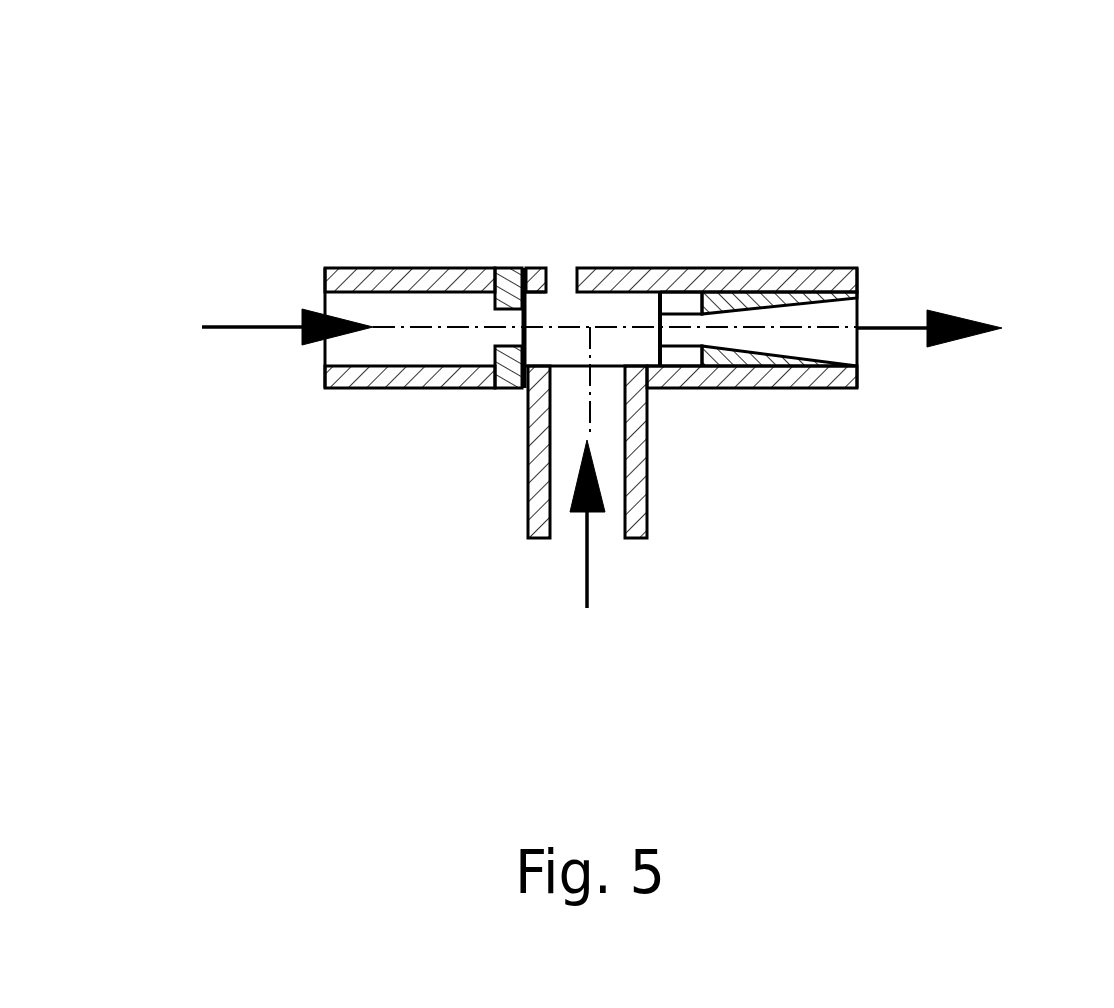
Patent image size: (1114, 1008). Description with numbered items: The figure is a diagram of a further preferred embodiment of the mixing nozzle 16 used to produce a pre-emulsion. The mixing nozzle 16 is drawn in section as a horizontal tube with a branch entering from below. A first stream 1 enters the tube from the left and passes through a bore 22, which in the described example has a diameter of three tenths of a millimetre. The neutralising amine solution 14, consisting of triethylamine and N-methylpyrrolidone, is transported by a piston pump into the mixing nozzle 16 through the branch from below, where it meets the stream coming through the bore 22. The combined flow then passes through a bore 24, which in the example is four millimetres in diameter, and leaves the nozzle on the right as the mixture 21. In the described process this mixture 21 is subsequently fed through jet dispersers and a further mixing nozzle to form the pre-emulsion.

The first fluid flow / inlet 1 is at (264, 329).
The neutralising amine solution 14 is at (601, 569).
The mixing nozzle 16 is at (605, 272).
The mixture 21 is at (973, 334).
The bore 22 is at (498, 327).
The bore 24 is at (673, 335).